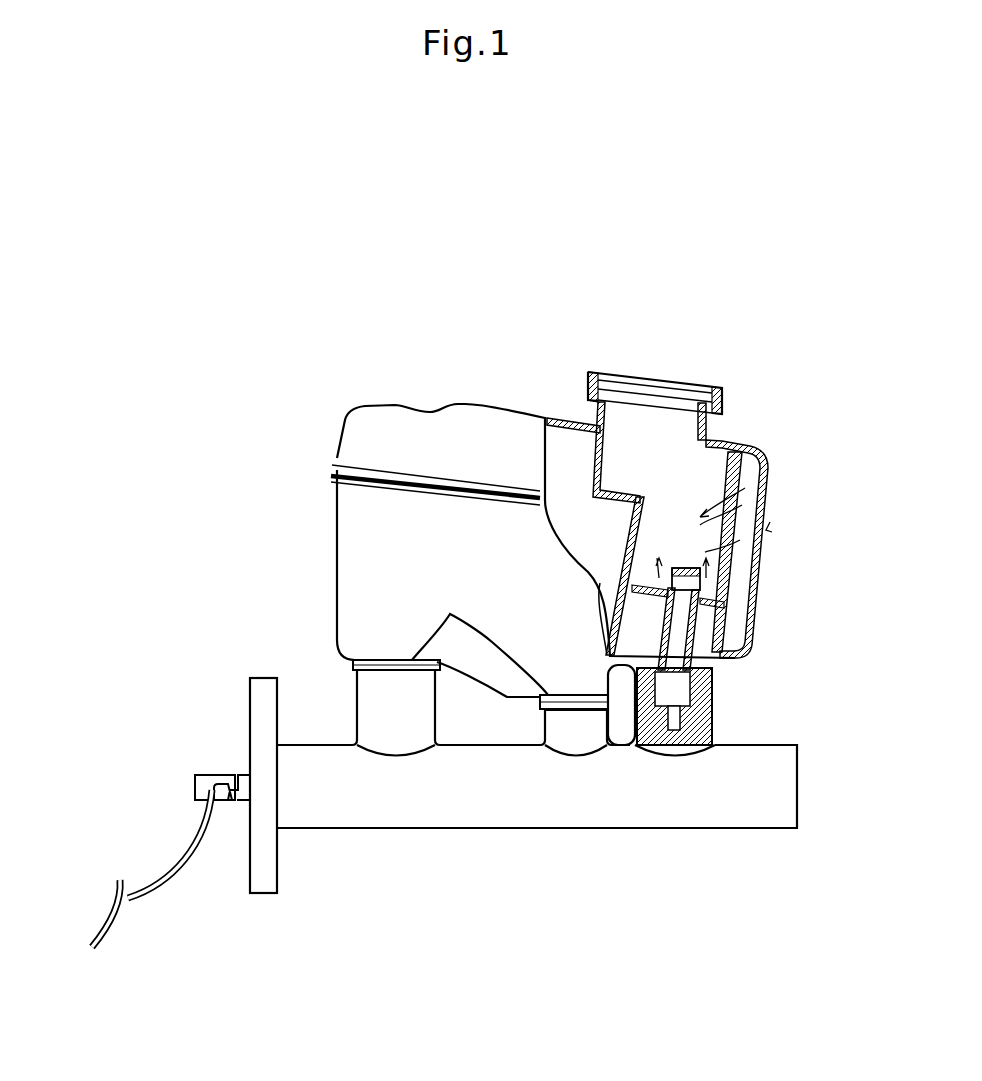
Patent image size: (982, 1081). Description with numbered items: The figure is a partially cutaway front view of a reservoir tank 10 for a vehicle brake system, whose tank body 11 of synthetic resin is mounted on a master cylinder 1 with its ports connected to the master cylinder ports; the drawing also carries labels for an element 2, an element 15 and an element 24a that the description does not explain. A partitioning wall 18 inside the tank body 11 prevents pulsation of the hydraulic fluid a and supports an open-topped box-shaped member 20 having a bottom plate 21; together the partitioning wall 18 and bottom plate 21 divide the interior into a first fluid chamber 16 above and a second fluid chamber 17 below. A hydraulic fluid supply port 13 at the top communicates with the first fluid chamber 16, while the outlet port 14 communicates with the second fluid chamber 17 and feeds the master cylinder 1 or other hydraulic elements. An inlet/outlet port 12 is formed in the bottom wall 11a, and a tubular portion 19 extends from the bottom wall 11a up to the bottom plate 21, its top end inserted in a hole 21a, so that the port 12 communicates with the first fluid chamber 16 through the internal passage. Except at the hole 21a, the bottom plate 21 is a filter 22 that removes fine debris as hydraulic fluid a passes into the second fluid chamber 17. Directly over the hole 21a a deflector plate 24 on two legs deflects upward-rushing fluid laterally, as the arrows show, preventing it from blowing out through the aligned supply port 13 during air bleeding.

The master cylinder 1 is at (476, 812).
The hose 2 is at (110, 913).
The reservoir tank 10 is at (334, 540).
The tank body 11 is at (420, 435).
The bottom wall 11a is at (700, 670).
The inlet/outlet port 12 is at (675, 692).
The hydraulic fluid supply port 13 is at (617, 395).
The outlet port 14 is at (452, 624).
The seal member 15 is at (670, 371).
The first fluid chamber 16 is at (652, 450).
The second fluid chamber 17 is at (600, 557).
The partitioning wall 18 is at (702, 603).
The tubular portion 19 is at (660, 624).
The box-shaped member 20 is at (738, 492).
The bottom plate 21 is at (627, 558).
The hole 21a is at (722, 620).
The filter 22 is at (701, 577).
The deflector plate 24 is at (742, 505).
The spring end 24a is at (770, 522).
The hydraulic fluid a is at (657, 530).